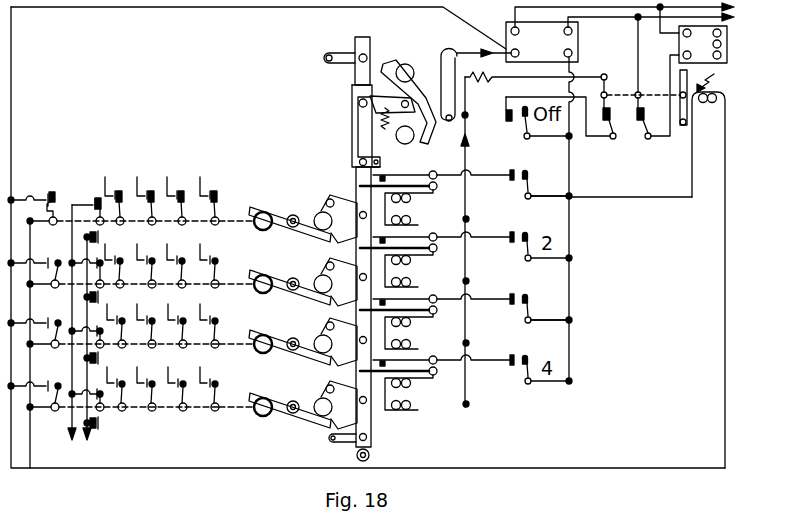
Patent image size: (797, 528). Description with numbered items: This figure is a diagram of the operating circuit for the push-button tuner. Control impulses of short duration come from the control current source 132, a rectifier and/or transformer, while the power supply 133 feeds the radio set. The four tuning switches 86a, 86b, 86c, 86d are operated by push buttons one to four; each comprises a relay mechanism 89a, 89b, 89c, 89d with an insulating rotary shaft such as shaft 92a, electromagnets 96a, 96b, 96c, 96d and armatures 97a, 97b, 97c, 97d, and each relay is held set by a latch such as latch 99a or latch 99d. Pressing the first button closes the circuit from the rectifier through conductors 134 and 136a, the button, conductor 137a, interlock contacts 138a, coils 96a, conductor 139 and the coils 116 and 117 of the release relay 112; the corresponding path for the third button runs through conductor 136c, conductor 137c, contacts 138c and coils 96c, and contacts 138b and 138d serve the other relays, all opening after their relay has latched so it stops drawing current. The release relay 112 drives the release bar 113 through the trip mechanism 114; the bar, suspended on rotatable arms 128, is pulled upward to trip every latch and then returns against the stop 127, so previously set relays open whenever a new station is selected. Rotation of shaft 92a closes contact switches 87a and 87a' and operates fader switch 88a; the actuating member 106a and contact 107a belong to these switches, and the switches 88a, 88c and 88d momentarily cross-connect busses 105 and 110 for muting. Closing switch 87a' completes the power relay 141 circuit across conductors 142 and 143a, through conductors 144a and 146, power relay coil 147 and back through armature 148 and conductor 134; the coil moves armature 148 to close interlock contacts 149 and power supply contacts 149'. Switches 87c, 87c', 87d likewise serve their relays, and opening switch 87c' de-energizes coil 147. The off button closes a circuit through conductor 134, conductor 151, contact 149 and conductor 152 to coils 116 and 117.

The conductor 142 is at (77, 7).
The conductor 146 is at (660, 466).
The control current source 132 is at (578, 40).
The power supply for the radio set 133 is at (727, 43).
The conductor 134 is at (570, 182).
The conductor 152 is at (474, 79).
The conductor 151 is at (518, 97).
The interlock contacts 149 is at (627, 120).
The power supply contacts 149' is at (667, 94).
The armature 148 is at (679, 85).
The power relay coil 147 is at (714, 102).
The power relay 141 is at (724, 79).
The release bar 113 is at (369, 44).
The rotatable arms 128 is at (338, 43).
The trip or release mechanism (latch) 114 is at (354, 128).
The release relay 112 is at (424, 110).
The electromagnet 116 is at (440, 67).
The electromagnet 117 is at (456, 132).
The conductor 139 is at (468, 220).
The latch 99a is at (342, 197).
The latch 99d is at (328, 440).
The stop 127 is at (370, 456).
The tuning switch 86a is at (449, 193).
The tuning switch 86b is at (449, 267).
The tuning switch 86c is at (452, 330).
The tuning switch 86d is at (452, 395).
The interlock contacts 138a is at (393, 176).
The interlock contacts 138b is at (401, 246).
The interlock contacts 138c is at (401, 307).
The interlock contacts 138d is at (404, 366).
The electromagnets (coils) 96a is at (407, 217).
The electromagnets (coils) 96b is at (405, 279).
The electromagnets (coils) 96c is at (411, 331).
The electromagnets (coils) 96d is at (412, 392).
The conductor 137a is at (478, 174).
The conductor 137c is at (480, 300).
The conductor 136a is at (545, 199).
The conductor 136c is at (571, 337).
The armature 97a is at (255, 207).
The armature 97b is at (258, 270).
The armature 97c is at (258, 335).
The armature 97d is at (258, 398).
The relay mechanism 89a is at (303, 212).
The relay mechanism 89b is at (303, 275).
The relay mechanism 89c is at (303, 338).
The relay mechanism 89d is at (303, 400).
The conductor 143a is at (30, 201).
The conductor 144a is at (40, 224).
The contact switch 87a' is at (57, 178).
The contact switch 88a is at (96, 200).
The actuating conductor member (switch contact) 106a is at (124, 169).
The contact switch 87a is at (157, 197).
The insulating rotary shaft 92a is at (164, 224).
The switch contact 107a is at (116, 240).
The contact switch 87c' is at (43, 353).
The contact switch 87c is at (148, 317).
The contact switch 88c is at (99, 357).
The contact switch 87d is at (193, 428).
The contact switch 88d is at (100, 424).
The bus 105 is at (110, 306).
The bus 110 is at (105, 351).